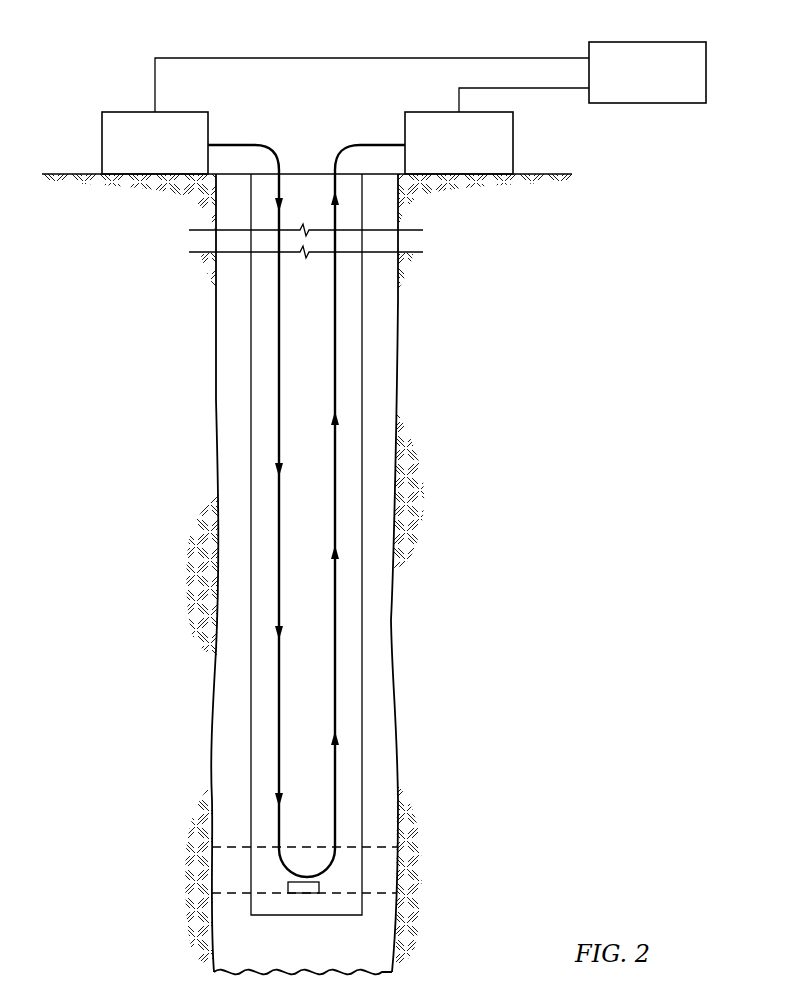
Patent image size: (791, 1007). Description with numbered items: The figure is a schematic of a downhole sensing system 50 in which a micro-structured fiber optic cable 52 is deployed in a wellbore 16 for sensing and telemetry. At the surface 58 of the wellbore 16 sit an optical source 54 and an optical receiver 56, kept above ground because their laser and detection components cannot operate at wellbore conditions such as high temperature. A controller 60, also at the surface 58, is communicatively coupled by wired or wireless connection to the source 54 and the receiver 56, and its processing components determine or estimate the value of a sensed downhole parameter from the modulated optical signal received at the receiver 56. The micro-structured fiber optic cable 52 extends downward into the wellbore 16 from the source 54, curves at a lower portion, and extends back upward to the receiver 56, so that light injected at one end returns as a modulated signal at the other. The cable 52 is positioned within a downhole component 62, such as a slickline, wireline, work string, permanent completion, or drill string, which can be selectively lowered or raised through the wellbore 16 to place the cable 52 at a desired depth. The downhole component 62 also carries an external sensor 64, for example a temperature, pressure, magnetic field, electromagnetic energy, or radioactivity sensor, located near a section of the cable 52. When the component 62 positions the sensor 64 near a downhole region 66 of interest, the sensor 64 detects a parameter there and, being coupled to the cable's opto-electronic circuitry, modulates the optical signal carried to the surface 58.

The downhole sensing system 50 is at (70, 76).
The optical source 54 is at (210, 123).
The optical receiver 56 is at (515, 142).
The surface 58 is at (62, 174).
The controller 60 is at (708, 50).
The downhole component 62 is at (362, 348).
The wellbore 16 is at (397, 366).
The micro-structured fiber optic cable 52 is at (336, 605).
The external sensor 64 is at (321, 885).
The downhole region 66 is at (231, 847).